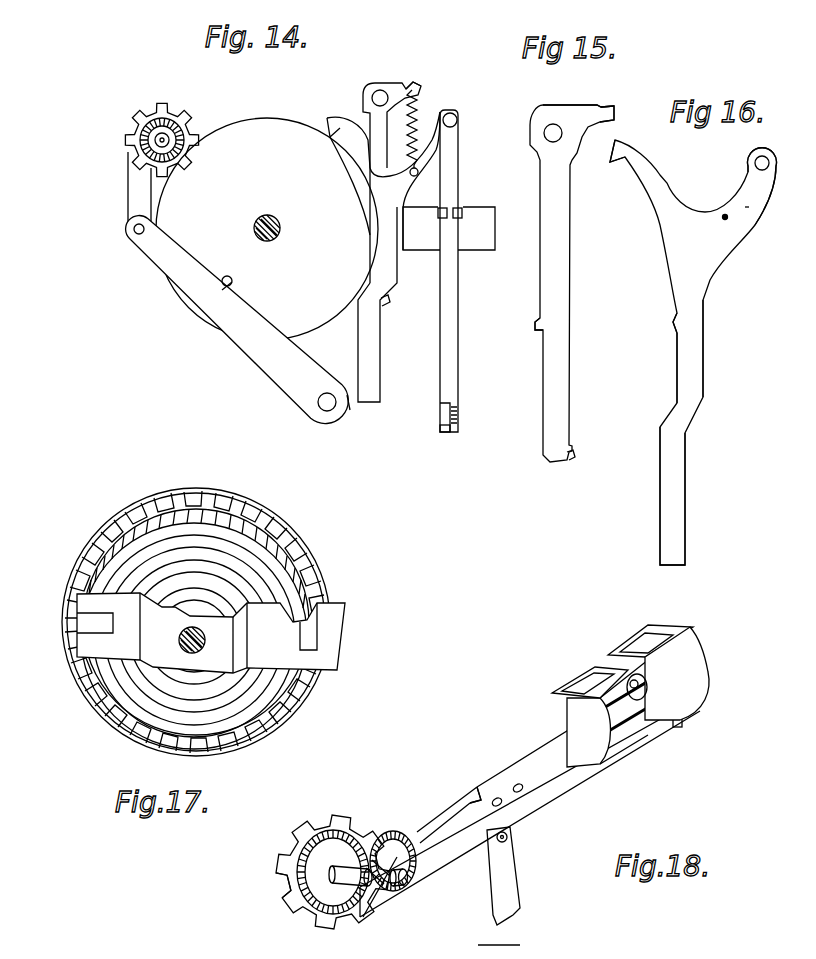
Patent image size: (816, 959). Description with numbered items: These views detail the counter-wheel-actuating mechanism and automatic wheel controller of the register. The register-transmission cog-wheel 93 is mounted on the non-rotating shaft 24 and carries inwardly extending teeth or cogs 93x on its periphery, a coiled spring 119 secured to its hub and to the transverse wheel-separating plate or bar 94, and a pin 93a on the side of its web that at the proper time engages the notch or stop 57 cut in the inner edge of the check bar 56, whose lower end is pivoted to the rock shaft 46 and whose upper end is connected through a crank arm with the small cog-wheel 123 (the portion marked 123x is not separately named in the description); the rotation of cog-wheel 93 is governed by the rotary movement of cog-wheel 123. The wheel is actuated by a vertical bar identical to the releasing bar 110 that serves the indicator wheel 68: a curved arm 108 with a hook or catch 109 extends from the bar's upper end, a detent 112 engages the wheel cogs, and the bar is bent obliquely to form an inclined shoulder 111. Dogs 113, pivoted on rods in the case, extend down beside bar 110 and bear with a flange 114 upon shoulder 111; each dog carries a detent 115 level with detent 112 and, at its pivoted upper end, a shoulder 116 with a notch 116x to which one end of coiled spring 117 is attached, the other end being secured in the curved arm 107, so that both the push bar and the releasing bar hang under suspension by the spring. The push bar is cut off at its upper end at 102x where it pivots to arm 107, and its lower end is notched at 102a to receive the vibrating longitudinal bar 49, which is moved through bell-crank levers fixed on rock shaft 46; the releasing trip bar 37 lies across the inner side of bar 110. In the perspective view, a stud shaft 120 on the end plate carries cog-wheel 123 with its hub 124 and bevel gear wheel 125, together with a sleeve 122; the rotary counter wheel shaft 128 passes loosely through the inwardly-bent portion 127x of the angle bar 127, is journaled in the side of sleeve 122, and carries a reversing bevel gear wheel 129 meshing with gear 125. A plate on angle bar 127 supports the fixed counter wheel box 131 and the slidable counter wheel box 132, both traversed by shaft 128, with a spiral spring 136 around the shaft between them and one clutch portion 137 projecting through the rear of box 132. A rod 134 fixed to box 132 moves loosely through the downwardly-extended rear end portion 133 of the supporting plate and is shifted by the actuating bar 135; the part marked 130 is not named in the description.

In FIG. 14, the non-rotating shaft 24 is at (277, 237).
In FIG. 17, the non-rotating shaft 24 is at (195, 652).
In FIG. 14, the releasing trip bar 37 is at (347, 403).
In FIG. 14, the rock shaft 46 is at (332, 403).
In FIG. 14, the longitudinal bar 49 is at (443, 437).
In FIG. 14, the check bar 56 is at (237, 335).
In FIG. 14, the notch or stop 57 is at (225, 277).
In FIG. 14, the indicator wheel 68 is at (133, 175).
In FIG. 14, the register-transmission cog-wheel 93 is at (274, 136).
In FIG. 17, the register-transmission cog-wheel 93 is at (196, 609).
In FIG. 14, the pin 93a is at (224, 286).
In FIG. 17, the teeth or cogs 93x is at (273, 532).
In FIG. 14, the wheel-separating plate 94 is at (487, 223).
In FIG. 17, the wheel-separating plate 94 is at (333, 613).
In FIG. 14, the cut-off upper end of push bar 102x is at (453, 111).
In FIG. 14, the notch of push bar 102a is at (440, 427).
In FIG. 14, the curved arm 107 is at (453, 148).
In FIG. 16, the curved arm 107 is at (753, 203).
In FIG. 16, the curved arm 108 is at (658, 192).
In FIG. 14, the hook or catch 109 is at (332, 115).
In FIG. 16, the hook or catch 109 is at (625, 158).
In FIG. 16, the releasing bar 110 is at (687, 367).
In FIG. 14, the inclined shoulder 111 is at (393, 295).
In FIG. 16, the inclined shoulder 111 is at (690, 412).
In FIG. 16, the detent 112 is at (670, 327).
In FIG. 15, the dog 113 is at (553, 270).
In FIG. 14, the flange 114 is at (390, 307).
In FIG. 15, the flange 114 is at (567, 457).
In FIG. 15, the detent 115 is at (537, 332).
In FIG. 14, the shoulder 116 is at (390, 83).
In FIG. 15, the shoulder 116 is at (582, 113).
In FIG. 14, the notch 116x is at (414, 84).
In FIG. 15, the notch 116x is at (605, 110).
In FIG. 14, the coiled spring 117 is at (414, 118).
In FIG. 17, the coiled spring 119 is at (150, 560).
In FIG. 18, the stud shaft 120 is at (398, 885).
In FIG. 18, the sleeve 122 is at (385, 832).
In FIG. 14, the small cog-wheel 123 is at (145, 122).
In FIG. 18, the small cog-wheel 123 is at (313, 817).
In FIG. 18, the gear teeth 123x is at (261, 864).
In FIG. 18, the hub 124 is at (337, 887).
In FIG. 18, the bevel gear wheel 125 is at (352, 830).
In FIG. 18, the angle bar 127 is at (452, 850).
In FIG. 18, the inwardly-bent portion 127x is at (527, 733).
In FIG. 18, the counter wheel shaft 128 is at (567, 727).
In FIG. 18, the reversing bevel gear wheel 129 is at (420, 813).
In FIG. 18, the groove 130 is at (623, 740).
In FIG. 18, the counter wheel box 131 is at (563, 678).
In FIG. 18, the counter wheel box 132 is at (617, 650).
In FIG. 18, the rear end portion of plate 133 is at (678, 727).
In FIG. 18, the rod 134 is at (593, 770).
In FIG. 18, the actuating bar 135 is at (510, 885).
In FIG. 18, the spiral spring 136 is at (693, 628).
In FIG. 18, the clutch portion 137 is at (499, 951).